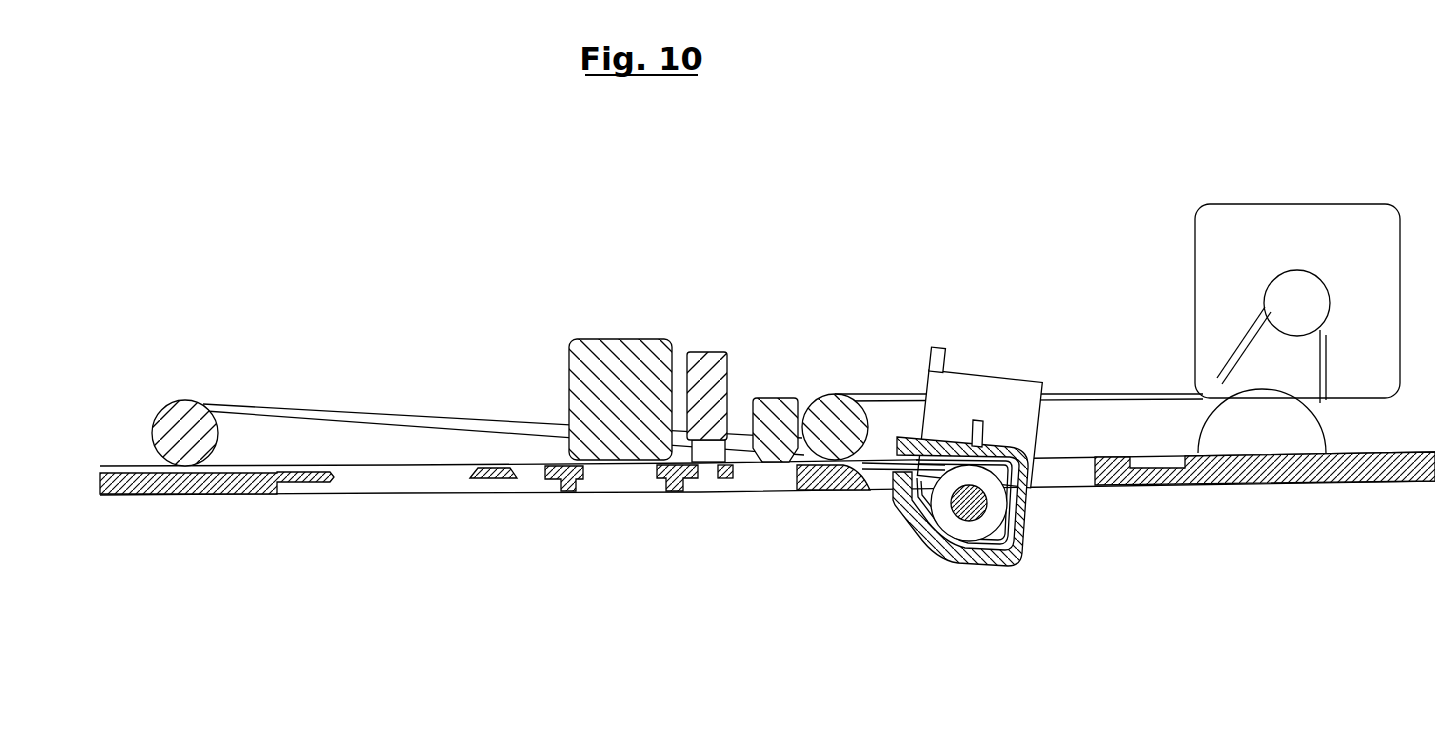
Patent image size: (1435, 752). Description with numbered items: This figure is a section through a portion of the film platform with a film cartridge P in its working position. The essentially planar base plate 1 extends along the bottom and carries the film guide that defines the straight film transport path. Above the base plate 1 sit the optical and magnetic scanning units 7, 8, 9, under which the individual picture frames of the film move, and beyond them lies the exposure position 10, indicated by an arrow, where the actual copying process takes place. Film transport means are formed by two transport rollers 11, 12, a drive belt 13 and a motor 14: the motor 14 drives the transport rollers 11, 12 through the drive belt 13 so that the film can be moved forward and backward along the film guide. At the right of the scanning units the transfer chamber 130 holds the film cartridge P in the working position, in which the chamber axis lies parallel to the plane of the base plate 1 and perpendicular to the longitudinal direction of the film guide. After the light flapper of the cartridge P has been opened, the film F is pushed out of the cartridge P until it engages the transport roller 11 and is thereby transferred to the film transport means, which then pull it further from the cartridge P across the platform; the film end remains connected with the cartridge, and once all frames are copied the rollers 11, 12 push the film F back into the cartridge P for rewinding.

The base plate 1 is at (150, 495).
The optical and magnetic scanning unit 7 is at (783, 418).
The optical and magnetic scanning unit 8 is at (705, 367).
The optical and magnetic scanning unit 9 is at (615, 342).
The exposure position 10 is at (403, 490).
The transport roller 11 is at (837, 412).
The transport roller 12 is at (185, 423).
The drive belt 13 is at (430, 420).
The motor 14 is at (1242, 223).
The transfer chamber 130 is at (1023, 478).
The film F is at (977, 533).
The film cartridge P is at (1005, 547).